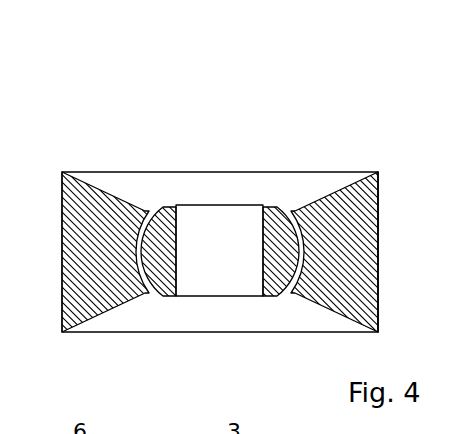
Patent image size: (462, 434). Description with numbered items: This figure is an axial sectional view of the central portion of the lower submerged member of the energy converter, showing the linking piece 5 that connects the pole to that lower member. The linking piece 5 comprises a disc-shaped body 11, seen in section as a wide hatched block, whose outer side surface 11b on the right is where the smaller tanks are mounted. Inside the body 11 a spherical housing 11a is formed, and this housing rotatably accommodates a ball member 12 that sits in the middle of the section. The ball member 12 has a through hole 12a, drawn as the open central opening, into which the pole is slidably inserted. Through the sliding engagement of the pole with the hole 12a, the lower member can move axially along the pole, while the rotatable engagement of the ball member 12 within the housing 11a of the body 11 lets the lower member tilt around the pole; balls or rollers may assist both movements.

The linking piece 5 is at (90, 167).
The disc-shaped body 11 is at (357, 180).
The spherical housing 11a is at (290, 222).
The outer side surface 11b is at (379, 236).
The ball member 12 is at (247, 205).
The through hole 12a is at (176, 229).